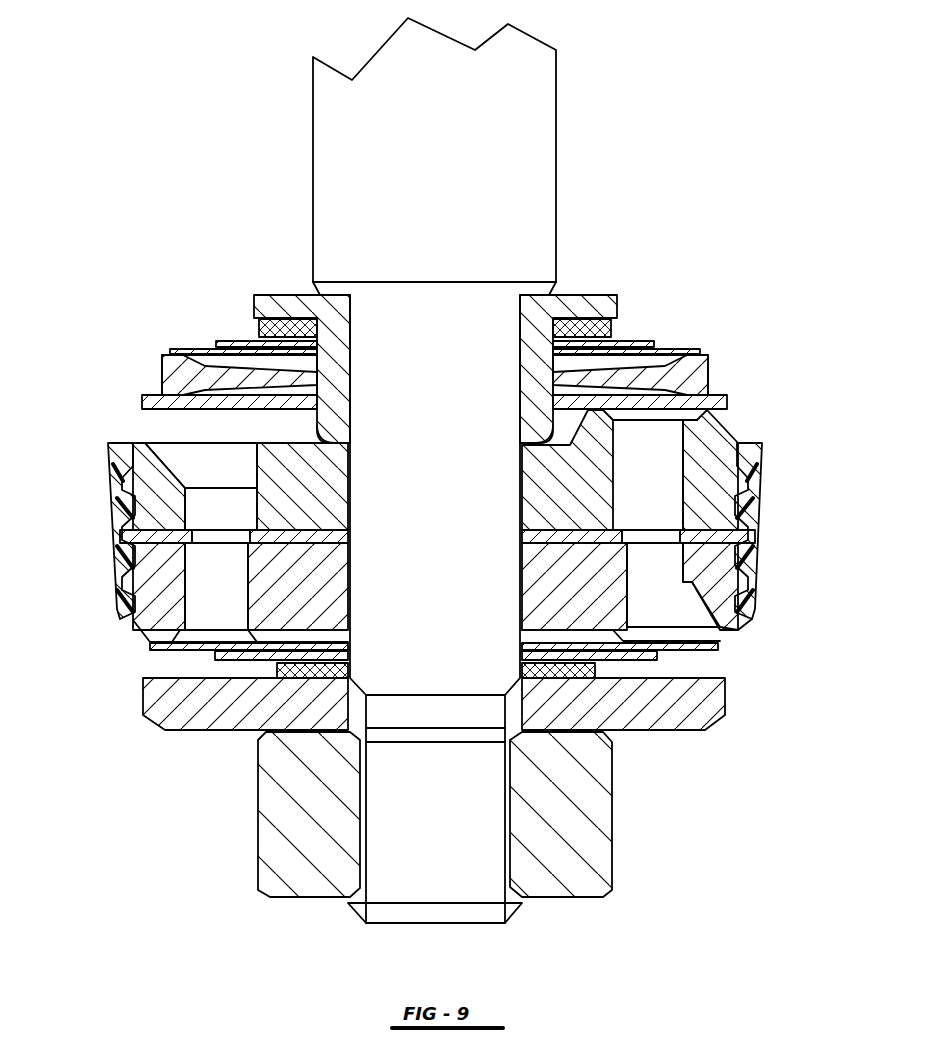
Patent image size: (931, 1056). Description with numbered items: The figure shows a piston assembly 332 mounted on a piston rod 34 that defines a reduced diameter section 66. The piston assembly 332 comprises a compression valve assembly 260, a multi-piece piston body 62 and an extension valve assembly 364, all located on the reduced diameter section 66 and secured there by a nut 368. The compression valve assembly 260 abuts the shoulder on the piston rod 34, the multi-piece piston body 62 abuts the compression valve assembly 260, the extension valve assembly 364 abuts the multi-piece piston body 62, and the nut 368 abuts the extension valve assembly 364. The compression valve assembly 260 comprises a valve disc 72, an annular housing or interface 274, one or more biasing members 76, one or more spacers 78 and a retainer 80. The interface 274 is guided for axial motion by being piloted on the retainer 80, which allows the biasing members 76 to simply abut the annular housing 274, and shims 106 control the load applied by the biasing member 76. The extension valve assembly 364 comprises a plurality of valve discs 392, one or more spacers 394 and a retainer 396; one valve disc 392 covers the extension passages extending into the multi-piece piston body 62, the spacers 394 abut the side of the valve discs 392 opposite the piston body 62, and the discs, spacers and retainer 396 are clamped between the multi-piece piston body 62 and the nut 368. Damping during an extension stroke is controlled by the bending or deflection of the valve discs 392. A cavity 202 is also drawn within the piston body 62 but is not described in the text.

The piston rod 34 is at (433, 176).
The reduced diameter section 66 is at (441, 553).
The compression valve assembly 260 is at (207, 294).
The retainer 80 is at (582, 308).
The shims 106 is at (348, 438).
The spacers 78 is at (610, 327).
The biasing members 76 is at (648, 345).
The annular housing or interface 274 is at (692, 372).
The valve disc 72 is at (725, 402).
The piston assembly 332 is at (101, 581).
The multi-piece piston body 62 is at (165, 604).
The cavity 202 is at (230, 596).
The extension valve assembly 364 is at (150, 732).
The valve discs 392 is at (657, 655).
The spacers 394 is at (583, 674).
The retainer 396 is at (708, 704).
The nut 368 is at (597, 823).